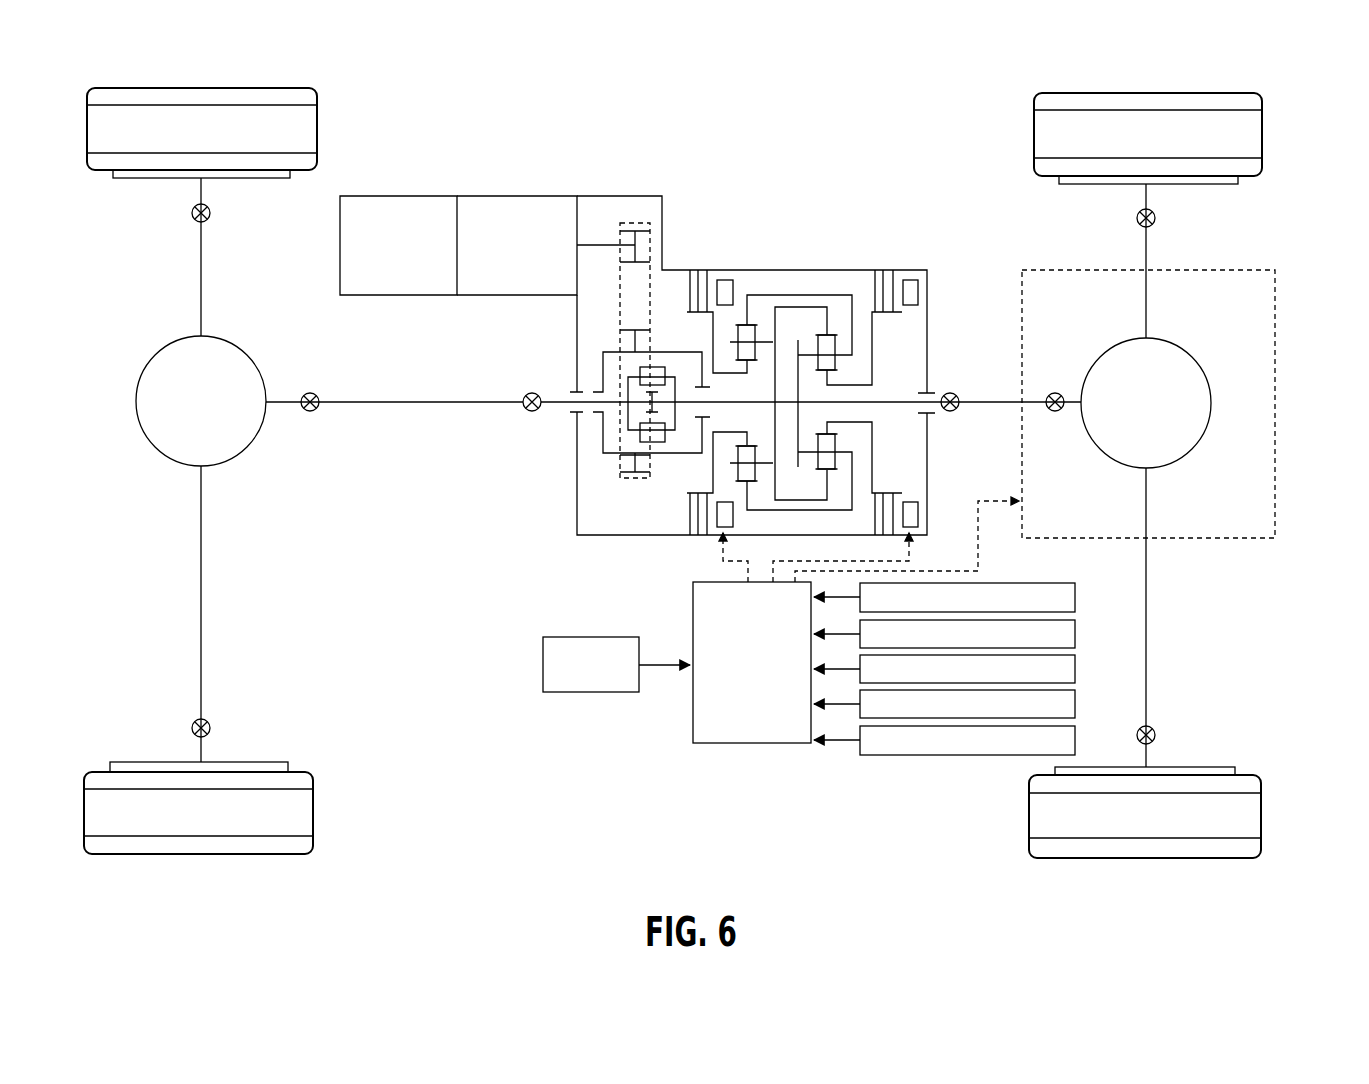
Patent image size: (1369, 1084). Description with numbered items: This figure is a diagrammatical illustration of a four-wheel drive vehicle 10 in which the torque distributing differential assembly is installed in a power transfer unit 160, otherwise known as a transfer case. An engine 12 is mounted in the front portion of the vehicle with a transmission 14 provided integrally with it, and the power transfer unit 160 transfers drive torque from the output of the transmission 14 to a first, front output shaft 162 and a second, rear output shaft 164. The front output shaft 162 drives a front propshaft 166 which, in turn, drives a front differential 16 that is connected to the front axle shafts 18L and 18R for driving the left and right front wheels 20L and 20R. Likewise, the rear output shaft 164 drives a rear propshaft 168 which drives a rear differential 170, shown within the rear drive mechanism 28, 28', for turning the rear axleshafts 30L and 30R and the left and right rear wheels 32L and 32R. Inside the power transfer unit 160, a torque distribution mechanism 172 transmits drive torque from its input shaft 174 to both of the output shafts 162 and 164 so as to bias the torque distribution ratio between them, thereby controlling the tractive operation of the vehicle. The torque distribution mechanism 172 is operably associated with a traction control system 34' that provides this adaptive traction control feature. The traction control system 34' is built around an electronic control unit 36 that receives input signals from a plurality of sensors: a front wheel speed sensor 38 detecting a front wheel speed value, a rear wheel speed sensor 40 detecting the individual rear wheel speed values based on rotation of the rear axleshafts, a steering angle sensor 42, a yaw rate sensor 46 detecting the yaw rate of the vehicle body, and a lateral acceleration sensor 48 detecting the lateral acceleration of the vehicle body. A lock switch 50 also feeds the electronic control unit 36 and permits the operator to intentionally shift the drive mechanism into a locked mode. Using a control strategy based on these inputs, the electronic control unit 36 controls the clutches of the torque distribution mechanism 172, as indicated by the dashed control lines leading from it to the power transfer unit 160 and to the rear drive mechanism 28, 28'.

The all-wheel drive vehicle 10 is at (449, 464).
The engine 12 is at (423, 207).
The transmission 14 is at (522, 208).
The front differential 16 is at (156, 391).
The right front axle shaft 18R is at (205, 244).
The left front axle shaft 18L is at (201, 598).
The right front wheel 20R is at (300, 128).
The left front wheel 20L is at (290, 815).
The drive mechanism 28 is at (1165, 373).
The drive mechanism 28' is at (1148, 404).
The right rear axleshaft 30R is at (1146, 252).
The left rear axleshaft 30L is at (1146, 643).
The right rear wheel 32R is at (1248, 135).
The left rear wheel 32L is at (1245, 820).
The traction control system 34' is at (835, 647).
The electronic control unit 36 is at (722, 731).
The front wheel speed sensor 38 is at (1060, 600).
The rear wheel speed sensor 40 is at (1060, 636).
The steering angle sensor 42 is at (1060, 671).
The yaw rate sensor 46 is at (1060, 706).
The lateral acceleration sensor 48 is at (1060, 742).
The lock switch 50 is at (557, 648).
The power transfer unit 160 is at (752, 350).
The front output shaft 162 is at (550, 402).
The rear output shaft 164 is at (887, 405).
The front propshaft 166 is at (403, 402).
The rear propshaft 168 is at (978, 406).
The rear differential 170 is at (1198, 416).
The torque distribution mechanism 172 is at (810, 296).
The input shaft 174 is at (603, 245).